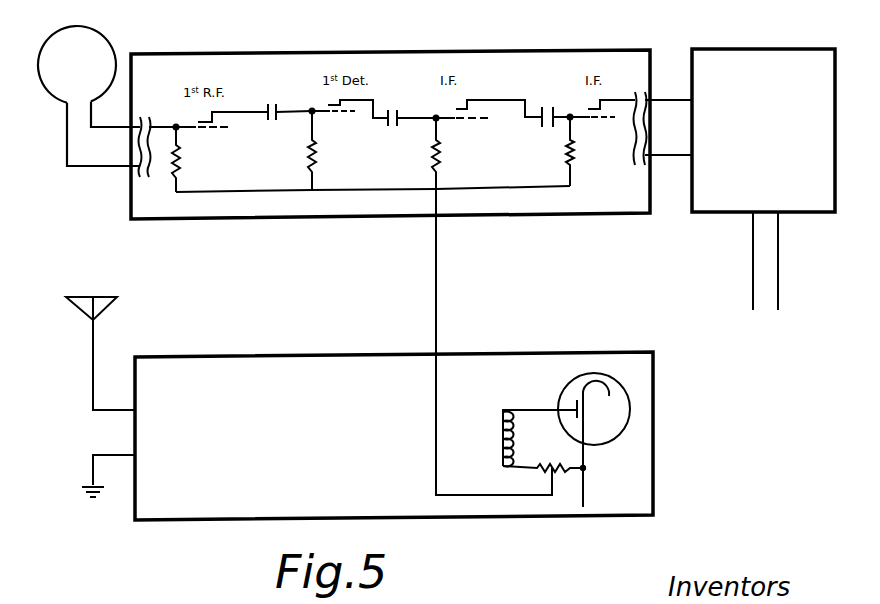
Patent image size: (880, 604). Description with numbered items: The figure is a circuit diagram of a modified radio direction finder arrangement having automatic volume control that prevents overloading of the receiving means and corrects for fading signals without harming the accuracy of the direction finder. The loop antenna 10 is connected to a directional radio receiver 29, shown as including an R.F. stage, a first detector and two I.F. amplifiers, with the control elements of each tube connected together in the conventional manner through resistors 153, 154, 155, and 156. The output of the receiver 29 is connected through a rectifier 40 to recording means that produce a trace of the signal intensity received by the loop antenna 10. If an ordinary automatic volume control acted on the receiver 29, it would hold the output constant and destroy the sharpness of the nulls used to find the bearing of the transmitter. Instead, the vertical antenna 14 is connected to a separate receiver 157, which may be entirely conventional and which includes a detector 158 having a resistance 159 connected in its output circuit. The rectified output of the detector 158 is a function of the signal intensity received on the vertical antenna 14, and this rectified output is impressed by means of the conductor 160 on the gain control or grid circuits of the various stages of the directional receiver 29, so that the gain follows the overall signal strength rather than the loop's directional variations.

The loop antenna 10 is at (71, 27).
The receiver 29 is at (352, 52).
The rectifier 40 is at (790, 47).
The resistor 153 is at (181, 161).
The resistor 154 is at (316, 155).
The resistor 155 is at (439, 155).
The resistor 156 is at (573, 150).
The vertical antenna 14 is at (97, 338).
The separate receiver 157 is at (322, 356).
The detector 158 is at (597, 373).
The resistance 159 is at (561, 449).
The conductor 160 is at (438, 322).